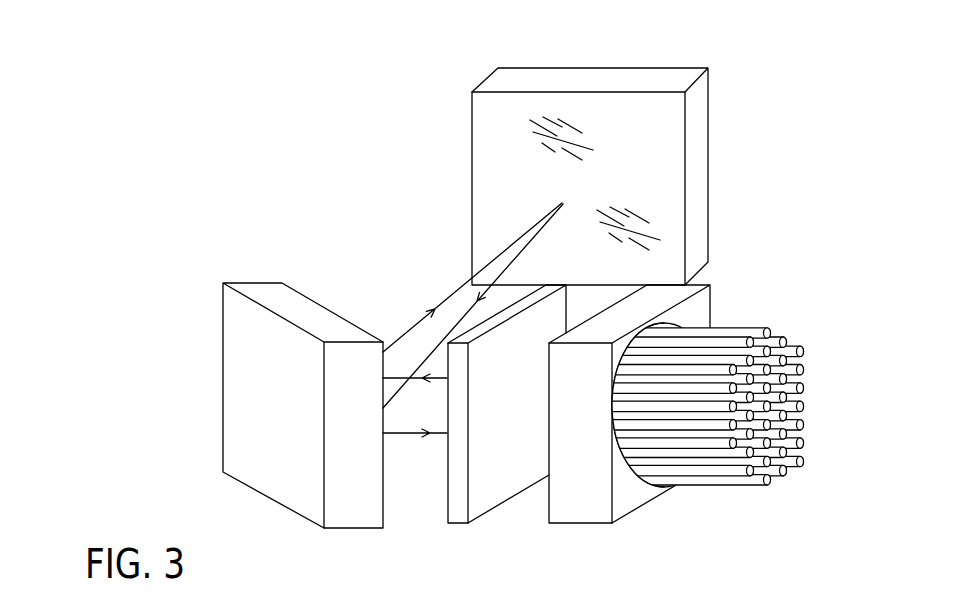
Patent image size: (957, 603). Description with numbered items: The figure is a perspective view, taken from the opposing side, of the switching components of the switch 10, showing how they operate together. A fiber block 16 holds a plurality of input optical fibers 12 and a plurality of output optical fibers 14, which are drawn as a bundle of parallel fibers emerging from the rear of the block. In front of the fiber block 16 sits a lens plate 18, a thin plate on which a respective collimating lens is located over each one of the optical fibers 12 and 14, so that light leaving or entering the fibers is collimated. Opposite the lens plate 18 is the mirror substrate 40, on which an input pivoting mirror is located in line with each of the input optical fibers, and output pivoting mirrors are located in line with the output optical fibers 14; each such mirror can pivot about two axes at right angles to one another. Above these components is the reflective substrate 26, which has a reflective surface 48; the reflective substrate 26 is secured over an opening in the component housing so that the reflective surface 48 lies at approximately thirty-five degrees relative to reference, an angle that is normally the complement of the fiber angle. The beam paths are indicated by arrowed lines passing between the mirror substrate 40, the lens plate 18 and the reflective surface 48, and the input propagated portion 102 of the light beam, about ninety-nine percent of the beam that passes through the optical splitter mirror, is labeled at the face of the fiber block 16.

The switch 10 is at (282, 119).
The input optical fibers 12 is at (803, 350).
The output optical fibers 14 is at (803, 465).
The fiber block 16 is at (593, 517).
The lens plate 18 is at (458, 527).
The reflective substrate 26 is at (618, 75).
The mirror substrate 40 is at (298, 307).
The reflective surface 48 is at (657, 137).
The input propagated portion 102 is at (548, 380).